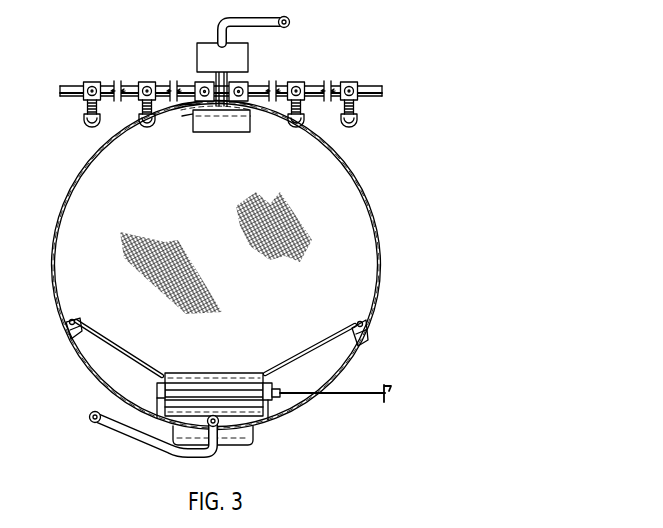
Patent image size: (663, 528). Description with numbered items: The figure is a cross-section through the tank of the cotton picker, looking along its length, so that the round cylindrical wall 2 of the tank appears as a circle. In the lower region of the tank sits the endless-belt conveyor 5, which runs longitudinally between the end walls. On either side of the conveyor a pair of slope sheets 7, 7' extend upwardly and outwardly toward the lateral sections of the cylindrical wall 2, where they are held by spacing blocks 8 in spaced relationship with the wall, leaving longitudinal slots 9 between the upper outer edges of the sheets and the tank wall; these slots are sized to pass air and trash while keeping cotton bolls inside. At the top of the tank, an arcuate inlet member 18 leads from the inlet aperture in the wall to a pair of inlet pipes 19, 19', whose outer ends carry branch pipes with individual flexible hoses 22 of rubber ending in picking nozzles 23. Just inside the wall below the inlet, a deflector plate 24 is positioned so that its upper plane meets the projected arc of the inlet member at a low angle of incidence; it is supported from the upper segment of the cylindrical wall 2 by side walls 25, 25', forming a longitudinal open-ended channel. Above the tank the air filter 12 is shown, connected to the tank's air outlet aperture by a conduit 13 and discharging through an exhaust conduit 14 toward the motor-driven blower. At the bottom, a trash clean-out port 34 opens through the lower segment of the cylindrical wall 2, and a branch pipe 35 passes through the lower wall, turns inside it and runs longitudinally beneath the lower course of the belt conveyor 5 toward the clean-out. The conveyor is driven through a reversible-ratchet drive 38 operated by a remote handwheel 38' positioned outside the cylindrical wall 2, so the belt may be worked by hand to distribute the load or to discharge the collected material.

The cylindrical wall 2 is at (380, 226).
The endless-belt conveyor 5 is at (252, 416).
The slope sheet 7 is at (310, 345).
The slope sheet 7' is at (119, 343).
The spacing block 8 is at (72, 338).
The longitudinal slot 9 is at (64, 320).
The air filter 12 is at (197, 56).
The conduit 13 is at (196, 80).
The exhaust conduit 14 is at (217, 24).
The arcuate inlet member 18 is at (250, 82).
The inlet pipe 19 is at (299, 77).
The inlet pipe 19' is at (136, 74).
The flexible hose 22 is at (355, 112).
The picking nozzle 23 is at (356, 130).
The deflector plate 24 is at (211, 132).
The side wall 25 is at (231, 122).
The side wall 25' is at (180, 125).
The trash clean-out port 34 is at (236, 446).
The branch pipe 35 is at (101, 423).
The reversible-ratchet drive 38 is at (291, 411).
The remote handwheel 38' is at (351, 397).